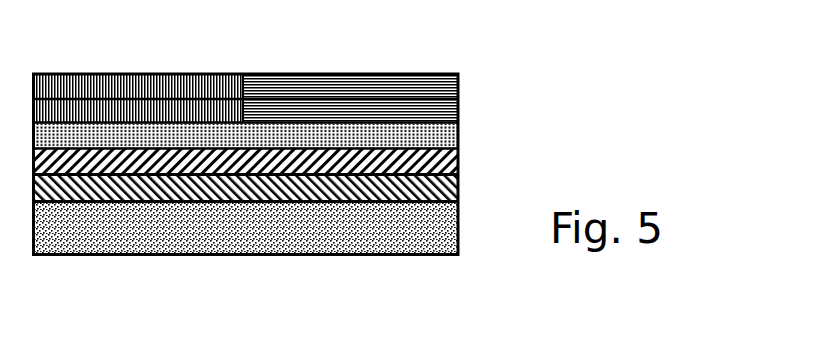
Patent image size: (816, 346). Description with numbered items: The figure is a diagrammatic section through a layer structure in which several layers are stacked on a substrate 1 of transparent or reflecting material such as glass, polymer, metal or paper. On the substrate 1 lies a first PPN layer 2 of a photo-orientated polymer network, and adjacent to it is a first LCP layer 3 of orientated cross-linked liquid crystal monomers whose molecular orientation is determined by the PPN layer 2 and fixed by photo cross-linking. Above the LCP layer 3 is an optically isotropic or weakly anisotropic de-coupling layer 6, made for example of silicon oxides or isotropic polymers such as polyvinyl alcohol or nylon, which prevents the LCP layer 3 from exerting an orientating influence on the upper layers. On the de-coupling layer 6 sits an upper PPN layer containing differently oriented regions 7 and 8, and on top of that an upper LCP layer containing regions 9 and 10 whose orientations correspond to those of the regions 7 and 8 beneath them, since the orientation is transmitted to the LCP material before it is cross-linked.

The substrate 1 is at (390, 238).
The PPN layer 2 is at (452, 205).
The LCP layer 3 is at (452, 162).
The de-coupling layer 6 is at (460, 122).
The regions with a first orientation 7 is at (387, 107).
The regions with a second orientation 8 is at (187, 107).
The regions with the first orientation 9 is at (337, 90).
The regions with the second orientation 10 is at (140, 88).